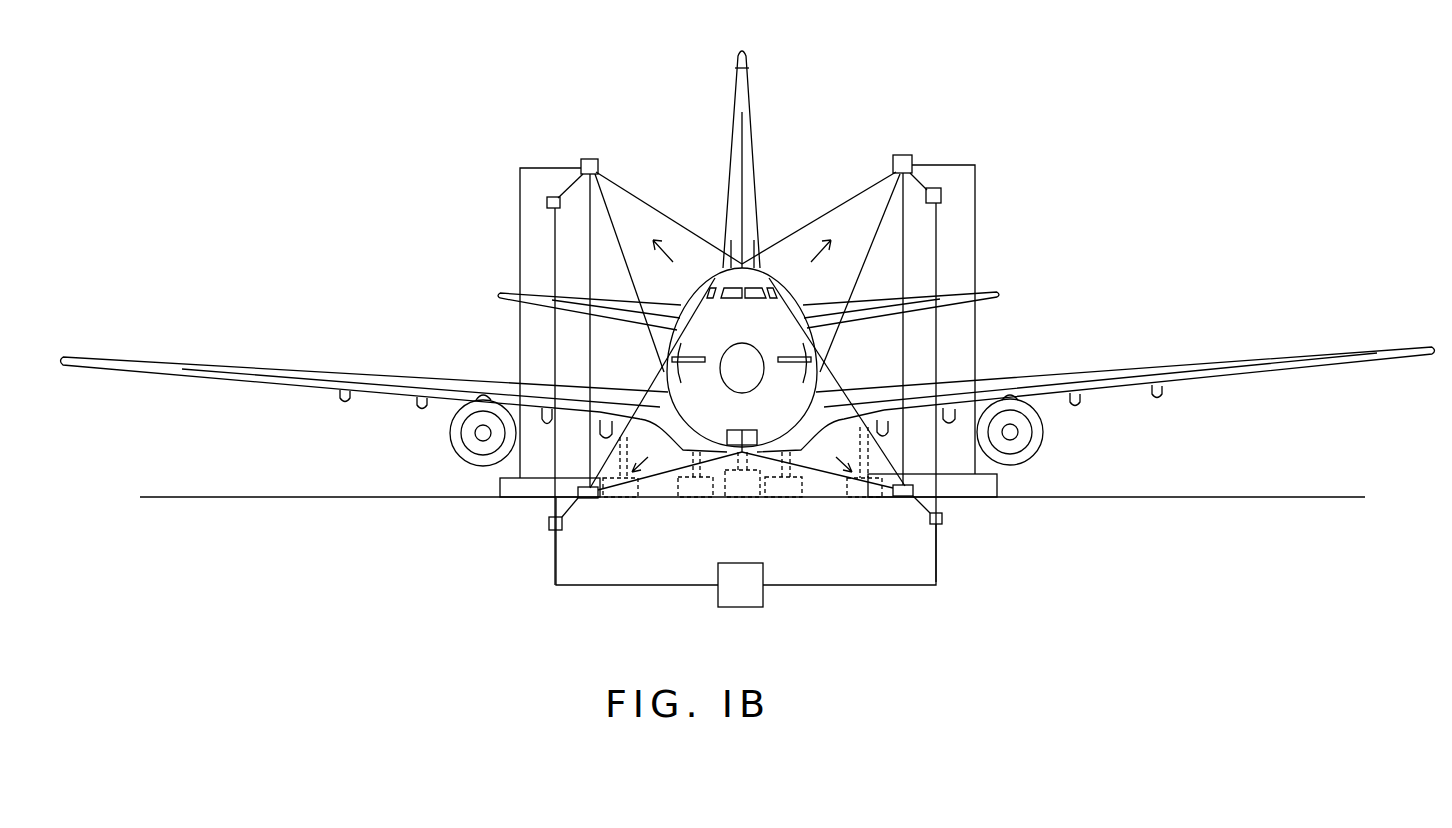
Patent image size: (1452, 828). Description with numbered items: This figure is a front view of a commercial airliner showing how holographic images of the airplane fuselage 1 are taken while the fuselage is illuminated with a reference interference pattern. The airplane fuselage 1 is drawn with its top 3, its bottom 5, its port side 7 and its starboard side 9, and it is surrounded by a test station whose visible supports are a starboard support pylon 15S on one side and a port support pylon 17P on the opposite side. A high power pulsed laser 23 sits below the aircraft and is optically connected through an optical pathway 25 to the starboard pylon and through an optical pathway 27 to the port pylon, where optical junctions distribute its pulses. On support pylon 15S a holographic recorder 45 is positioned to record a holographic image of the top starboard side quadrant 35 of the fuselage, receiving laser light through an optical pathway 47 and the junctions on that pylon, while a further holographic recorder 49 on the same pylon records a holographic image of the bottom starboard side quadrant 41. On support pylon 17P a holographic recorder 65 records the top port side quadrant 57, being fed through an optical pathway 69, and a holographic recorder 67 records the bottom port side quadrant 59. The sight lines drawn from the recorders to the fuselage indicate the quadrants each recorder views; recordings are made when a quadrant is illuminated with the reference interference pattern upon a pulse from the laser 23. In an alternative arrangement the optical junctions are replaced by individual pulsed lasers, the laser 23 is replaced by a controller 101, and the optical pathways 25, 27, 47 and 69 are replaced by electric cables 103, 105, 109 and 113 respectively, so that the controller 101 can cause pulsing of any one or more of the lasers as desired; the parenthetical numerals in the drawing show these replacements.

The airplane fuselage 1 is at (813, 352).
The top 3 is at (758, 256).
The bottom 5 is at (745, 455).
The port side 7 is at (813, 331).
The starboard side 9 is at (662, 335).
The support pylon 15S is at (520, 200).
The support pylon 17P is at (975, 188).
The high power pulsed laser 23 is at (790, 606).
The controller 101 is at (763, 600).
The optical pathway 25 is at (637, 573).
The electric cable 103 is at (640, 585).
The optical pathway 27 is at (884, 578).
The electric cable 105 is at (905, 585).
The top starboard side quadrant 35 is at (708, 285).
The bottom starboard side quadrant 41 is at (684, 430).
The holographic recorder 45 is at (593, 158).
The optical pathway 47 is at (477, 396).
The electric cable 109 is at (555, 258).
The holographic recorder 49 is at (590, 500).
The top port side quadrant 57 is at (772, 280).
The bottom port side quadrant 59 is at (792, 430).
The holographic recorder 65 is at (905, 155).
The holographic recorder 67 is at (893, 498).
The optical pathway 69 is at (1015, 392).
The electric cable 113 is at (936, 258).